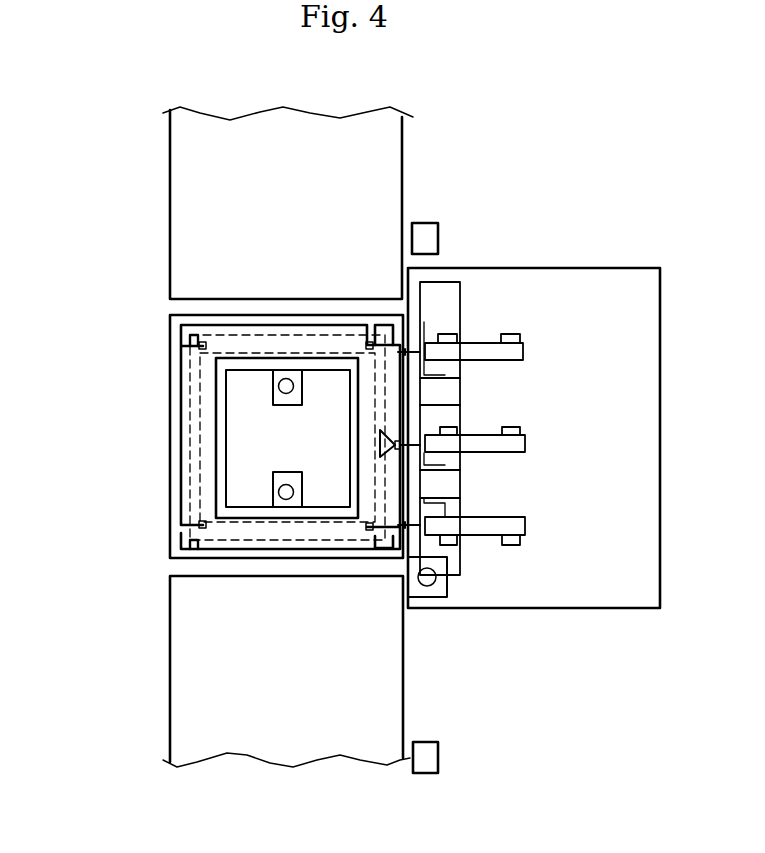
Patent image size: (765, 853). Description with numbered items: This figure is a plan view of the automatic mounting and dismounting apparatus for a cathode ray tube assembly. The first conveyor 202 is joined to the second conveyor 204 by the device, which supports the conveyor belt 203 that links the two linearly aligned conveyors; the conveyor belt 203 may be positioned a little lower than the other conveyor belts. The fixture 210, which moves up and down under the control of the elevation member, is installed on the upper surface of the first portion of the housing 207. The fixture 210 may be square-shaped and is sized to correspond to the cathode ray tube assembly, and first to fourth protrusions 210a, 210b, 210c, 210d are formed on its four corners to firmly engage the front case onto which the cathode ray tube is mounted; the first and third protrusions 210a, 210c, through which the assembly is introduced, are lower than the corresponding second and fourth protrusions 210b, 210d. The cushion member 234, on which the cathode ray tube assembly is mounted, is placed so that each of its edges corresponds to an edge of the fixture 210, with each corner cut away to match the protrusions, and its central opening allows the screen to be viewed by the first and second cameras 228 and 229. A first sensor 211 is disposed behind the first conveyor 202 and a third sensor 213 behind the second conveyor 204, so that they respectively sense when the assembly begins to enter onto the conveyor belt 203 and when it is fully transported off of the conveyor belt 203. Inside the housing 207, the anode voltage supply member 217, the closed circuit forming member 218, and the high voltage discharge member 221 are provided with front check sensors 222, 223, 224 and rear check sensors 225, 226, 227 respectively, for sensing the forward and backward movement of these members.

The first conveyor 202 is at (393, 170).
The conveyor belt 203 is at (207, 434).
The second conveyor 204 is at (180, 670).
The housing 207 is at (662, 440).
The fixture 210 is at (253, 550).
The first protrusion 210a is at (384, 332).
The second protrusion 210b is at (388, 548).
The third protrusion 210c is at (180, 335).
The fourth protrusion 210d is at (180, 542).
The first sensor 211 is at (440, 238).
The third sensor 213 is at (440, 757).
The anode voltage supply member 217 is at (525, 444).
The closed circuit forming member 218 is at (525, 526).
The high voltage discharge member 221 is at (525, 351).
The front check sensor 222 is at (448, 331).
The front check sensor 223 is at (447, 426).
The front check sensor 224 is at (447, 546).
The rear check sensor 225 is at (512, 333).
The rear check sensor 226 is at (512, 427).
The rear check sensor 227 is at (512, 546).
The first camera 228 is at (278, 386).
The second camera 229 is at (278, 492).
The cushion member 234 is at (276, 343).